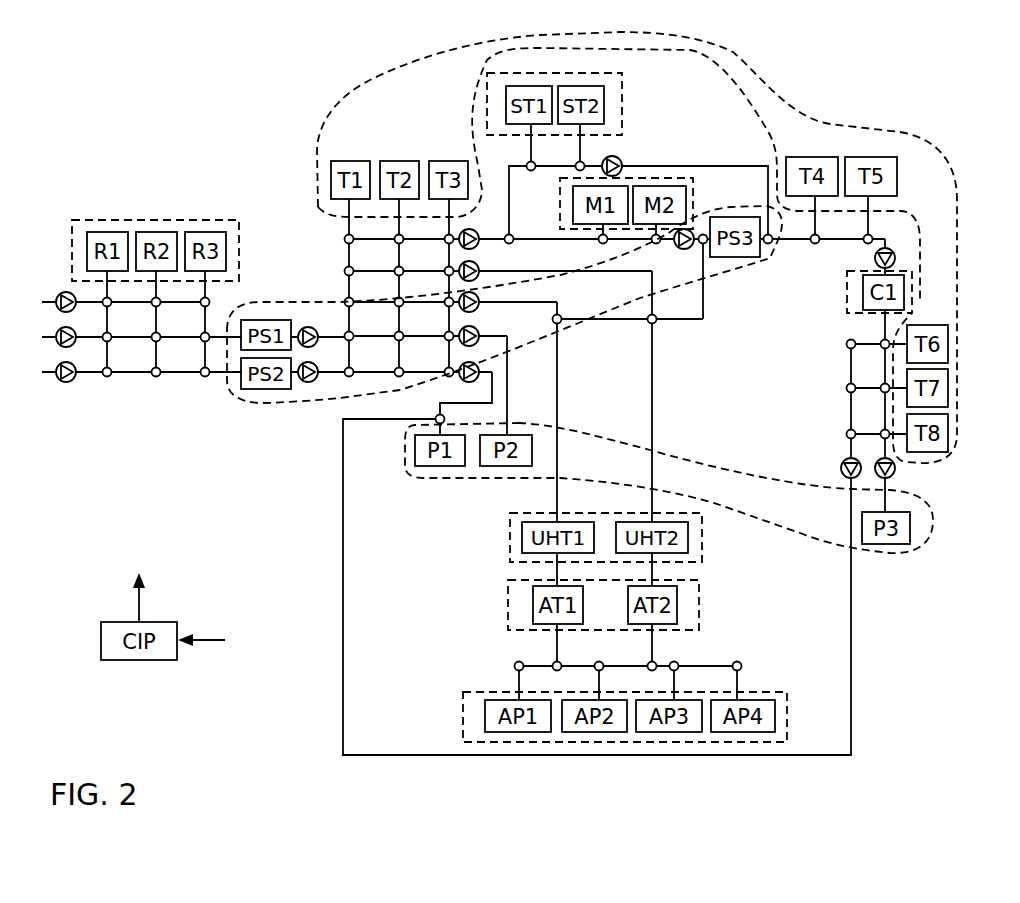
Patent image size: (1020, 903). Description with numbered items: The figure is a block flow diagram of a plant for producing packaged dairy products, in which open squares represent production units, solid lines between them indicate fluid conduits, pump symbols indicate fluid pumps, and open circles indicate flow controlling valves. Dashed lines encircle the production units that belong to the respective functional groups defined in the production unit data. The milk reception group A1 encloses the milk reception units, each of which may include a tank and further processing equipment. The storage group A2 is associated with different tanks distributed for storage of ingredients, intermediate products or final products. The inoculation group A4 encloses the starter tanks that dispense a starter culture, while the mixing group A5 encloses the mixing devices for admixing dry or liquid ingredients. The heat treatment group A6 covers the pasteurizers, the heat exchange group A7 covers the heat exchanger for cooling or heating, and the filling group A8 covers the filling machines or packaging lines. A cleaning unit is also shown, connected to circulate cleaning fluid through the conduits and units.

The milk reception group A1 is at (118, 218).
The storage group A2 is at (733, 52).
The inoculation group A4 is at (622, 98).
The mixing group A5 is at (643, 177).
The heat treatment group A6 is at (260, 403).
The heat exchange group A7 is at (847, 291).
The filling group A8 is at (703, 460).